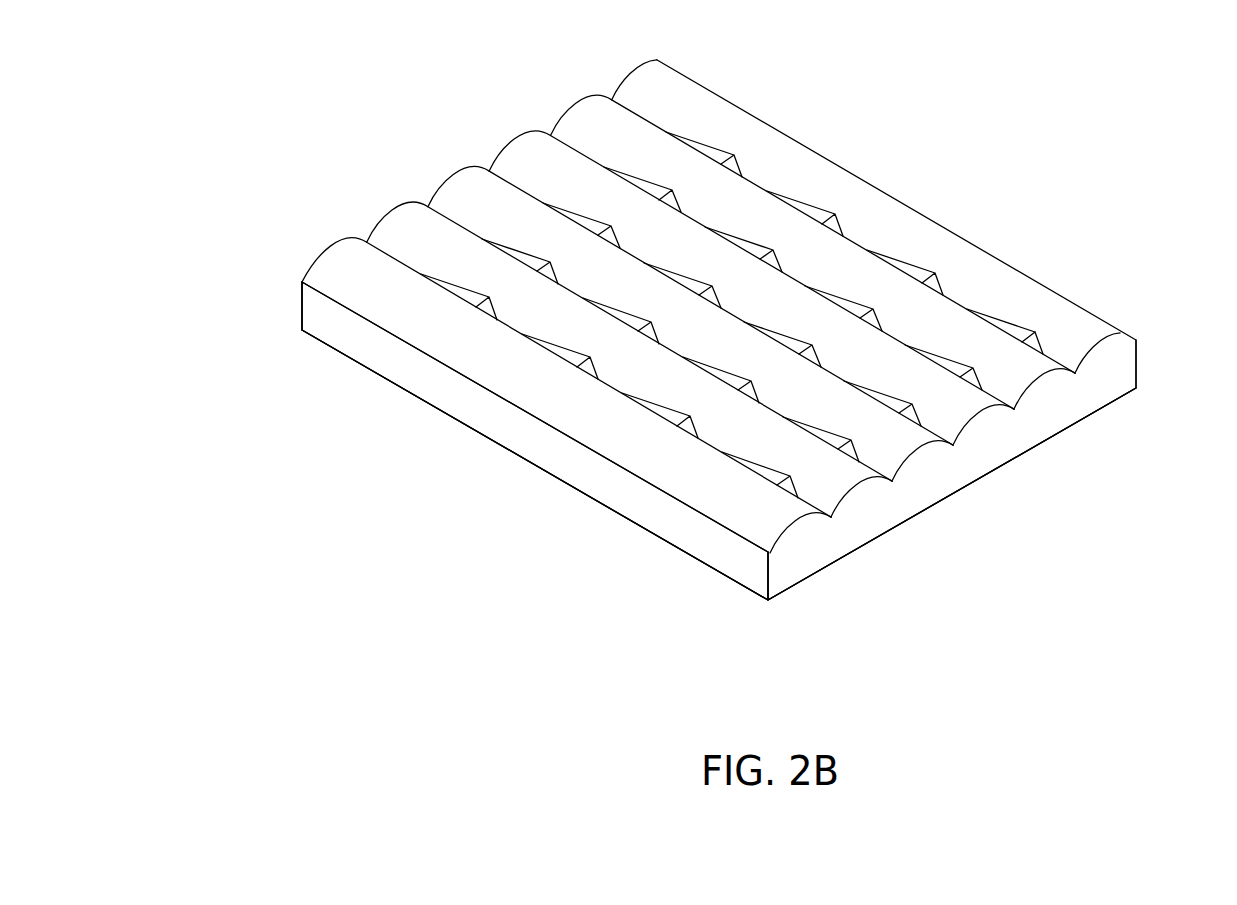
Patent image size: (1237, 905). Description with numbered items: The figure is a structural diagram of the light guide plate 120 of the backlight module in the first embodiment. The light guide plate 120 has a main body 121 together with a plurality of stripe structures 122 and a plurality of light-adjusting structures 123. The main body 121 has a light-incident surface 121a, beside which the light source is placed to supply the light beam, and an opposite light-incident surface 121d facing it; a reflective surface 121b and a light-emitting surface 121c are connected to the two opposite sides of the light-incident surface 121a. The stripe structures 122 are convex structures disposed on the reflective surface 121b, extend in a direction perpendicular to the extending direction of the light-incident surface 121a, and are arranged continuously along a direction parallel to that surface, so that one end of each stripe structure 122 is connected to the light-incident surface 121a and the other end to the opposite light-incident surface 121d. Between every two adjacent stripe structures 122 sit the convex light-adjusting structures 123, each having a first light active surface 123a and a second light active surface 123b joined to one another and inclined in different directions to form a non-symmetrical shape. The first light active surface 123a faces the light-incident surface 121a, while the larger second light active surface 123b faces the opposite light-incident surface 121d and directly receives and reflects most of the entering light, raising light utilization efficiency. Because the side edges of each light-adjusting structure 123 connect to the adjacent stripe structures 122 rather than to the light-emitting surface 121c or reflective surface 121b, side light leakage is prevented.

The light guide plate 120 is at (191, 116).
The main body 121 is at (426, 388).
The light-incident surface 121a is at (1000, 447).
The reflective surface 121b is at (587, 450).
The light-emitting surface 121c is at (708, 565).
The opposite light-incident surface 121d is at (301, 308).
The stripe structures 122 is at (1065, 313).
The light-adjusting structures 123 is at (1036, 320).
The first light active surface 123a is at (1037, 342).
The second light active surface 123b is at (1011, 330).